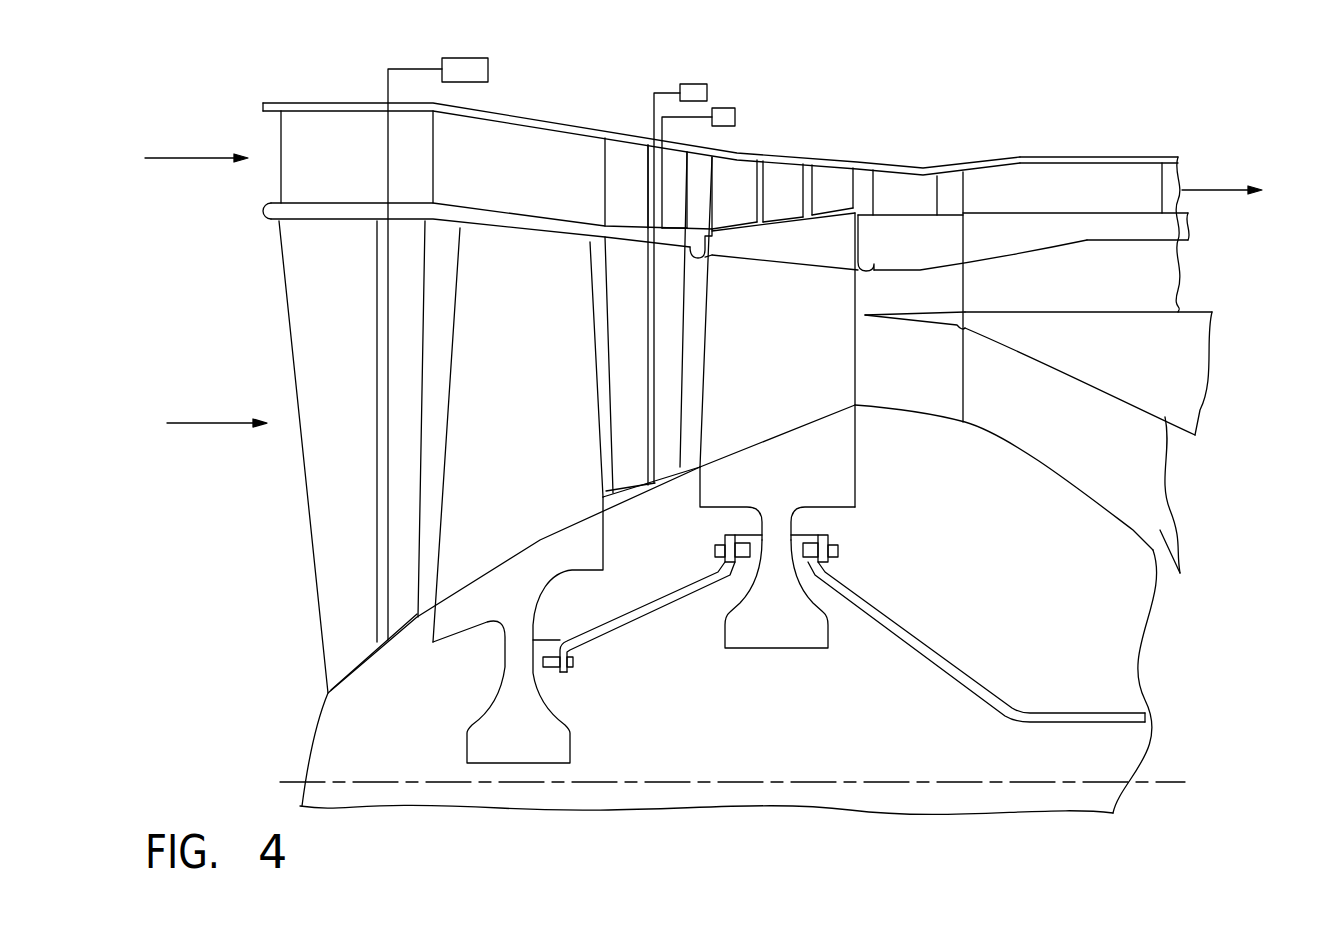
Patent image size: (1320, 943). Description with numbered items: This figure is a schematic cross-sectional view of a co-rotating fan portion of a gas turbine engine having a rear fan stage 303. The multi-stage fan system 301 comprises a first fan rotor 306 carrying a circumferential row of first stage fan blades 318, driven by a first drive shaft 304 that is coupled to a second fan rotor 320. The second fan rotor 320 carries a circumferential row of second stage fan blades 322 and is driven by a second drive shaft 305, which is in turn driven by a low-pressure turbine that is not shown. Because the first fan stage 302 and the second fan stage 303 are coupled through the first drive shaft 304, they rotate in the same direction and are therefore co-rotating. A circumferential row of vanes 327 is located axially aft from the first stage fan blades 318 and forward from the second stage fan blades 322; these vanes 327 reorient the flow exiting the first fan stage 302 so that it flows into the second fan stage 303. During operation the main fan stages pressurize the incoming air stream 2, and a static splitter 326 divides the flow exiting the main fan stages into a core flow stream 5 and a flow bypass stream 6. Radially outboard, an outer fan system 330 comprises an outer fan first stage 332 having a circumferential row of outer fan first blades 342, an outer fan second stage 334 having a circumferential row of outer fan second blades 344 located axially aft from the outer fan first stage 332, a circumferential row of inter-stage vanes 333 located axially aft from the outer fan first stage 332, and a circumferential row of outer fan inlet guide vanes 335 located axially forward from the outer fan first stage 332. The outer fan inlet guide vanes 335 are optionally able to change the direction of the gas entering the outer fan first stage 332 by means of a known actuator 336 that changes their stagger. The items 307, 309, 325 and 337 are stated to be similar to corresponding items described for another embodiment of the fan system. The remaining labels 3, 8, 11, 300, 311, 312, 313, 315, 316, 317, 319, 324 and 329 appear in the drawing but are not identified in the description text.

The air stream 2 is at (217, 425).
The bypass airflow 3 is at (203, 160).
The core flow stream 5 is at (1017, 385).
The flow bypass stream 6 is at (988, 288).
The exhaust airflow 8 is at (1205, 190).
The engine centerline axis 11 is at (292, 782).
The gas turbine engine 300 is at (1048, 112).
The multi-stage fan system 301 is at (716, 680).
The first fan stage 302 is at (445, 707).
The rear fan stage 303 is at (853, 527).
The first drive shaft 304 is at (637, 615).
The second drive shaft 305 is at (920, 630).
The first fan rotor 306 is at (517, 622).
The corresponding item of the other embodiment 307 is at (1043, 155).
The corresponding item of the other embodiment 309 is at (1128, 183).
The fan blade 311 is at (312, 328).
The fan rotor 312 is at (407, 291).
The sensor 313 is at (472, 74).
The inner casing 315 is at (443, 213).
The rotor blade 316 is at (435, 372).
The fan casing 317 is at (477, 130).
The first stage fan blades 318 is at (547, 487).
The hub flowpath 319 is at (800, 427).
The second fan rotor 320 is at (802, 480).
The second stage fan blades 322 is at (807, 387).
The splitter strut 324 is at (818, 237).
The corresponding item of the other embodiment 325 is at (1068, 230).
The static splitter 326 is at (1160, 353).
The vanes 327 is at (668, 352).
The actuator 329 is at (693, 83).
The outer fan system 330 is at (817, 105).
The outer fan first stage 332 is at (745, 175).
The inter-stage vanes 333 is at (782, 175).
The outer fan second stage 334 is at (853, 170).
The outer fan inlet guide vanes 335 is at (672, 165).
The actuator 336 is at (727, 108).
The corresponding item of the other embodiment 337 is at (907, 190).
The outer fan first blades 342 is at (733, 180).
The outer fan second blades 344 is at (835, 178).